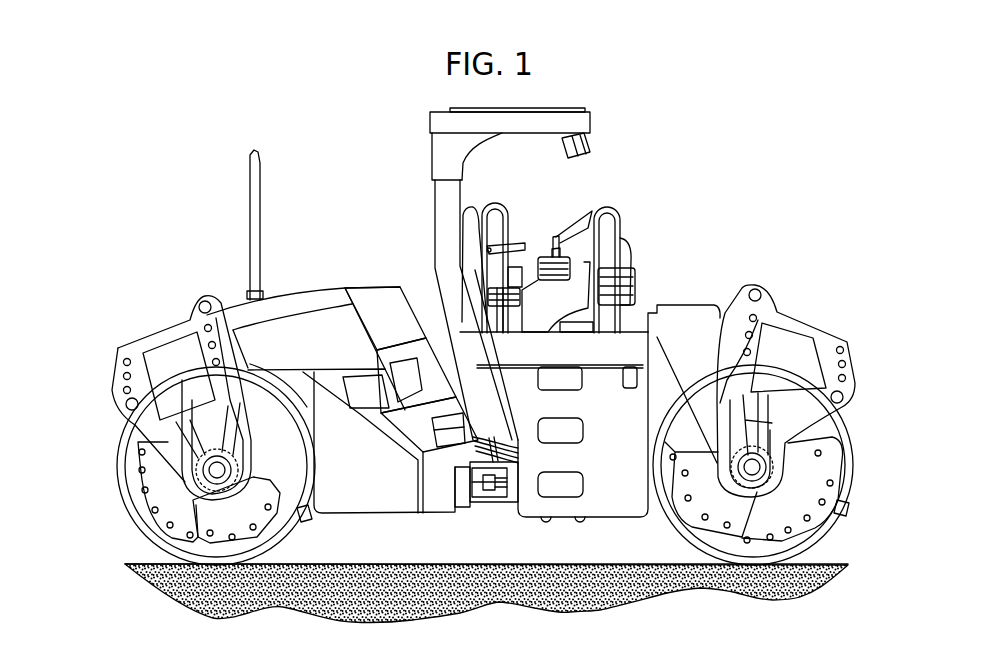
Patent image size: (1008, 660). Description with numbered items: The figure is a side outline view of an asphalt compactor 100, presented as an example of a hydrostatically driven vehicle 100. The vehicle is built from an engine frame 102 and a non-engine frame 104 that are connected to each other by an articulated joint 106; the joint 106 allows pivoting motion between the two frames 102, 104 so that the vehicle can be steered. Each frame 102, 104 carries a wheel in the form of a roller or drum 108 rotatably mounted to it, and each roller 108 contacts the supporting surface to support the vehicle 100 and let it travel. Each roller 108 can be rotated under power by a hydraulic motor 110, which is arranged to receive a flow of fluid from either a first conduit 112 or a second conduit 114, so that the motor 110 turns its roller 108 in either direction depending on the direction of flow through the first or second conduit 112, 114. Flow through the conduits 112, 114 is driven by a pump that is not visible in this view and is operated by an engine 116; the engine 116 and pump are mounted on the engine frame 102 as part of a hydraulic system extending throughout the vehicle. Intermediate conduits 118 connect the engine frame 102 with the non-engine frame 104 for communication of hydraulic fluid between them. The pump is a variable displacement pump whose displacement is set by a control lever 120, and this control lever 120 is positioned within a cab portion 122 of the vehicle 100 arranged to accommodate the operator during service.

The asphalt compactor 100 is at (306, 158).
The engine frame 102 is at (167, 351).
The non-engine frame 104 is at (695, 313).
The articulated joint 106 is at (492, 514).
The roller 108 is at (280, 525).
The hydraulic motor 110 is at (142, 442).
The first conduit 112 is at (207, 295).
The second conduit 114 is at (150, 357).
The engine 116 is at (312, 302).
The intermediate conduits 118 is at (433, 312).
The control lever 120 is at (553, 236).
The cab portion 122 is at (475, 108).